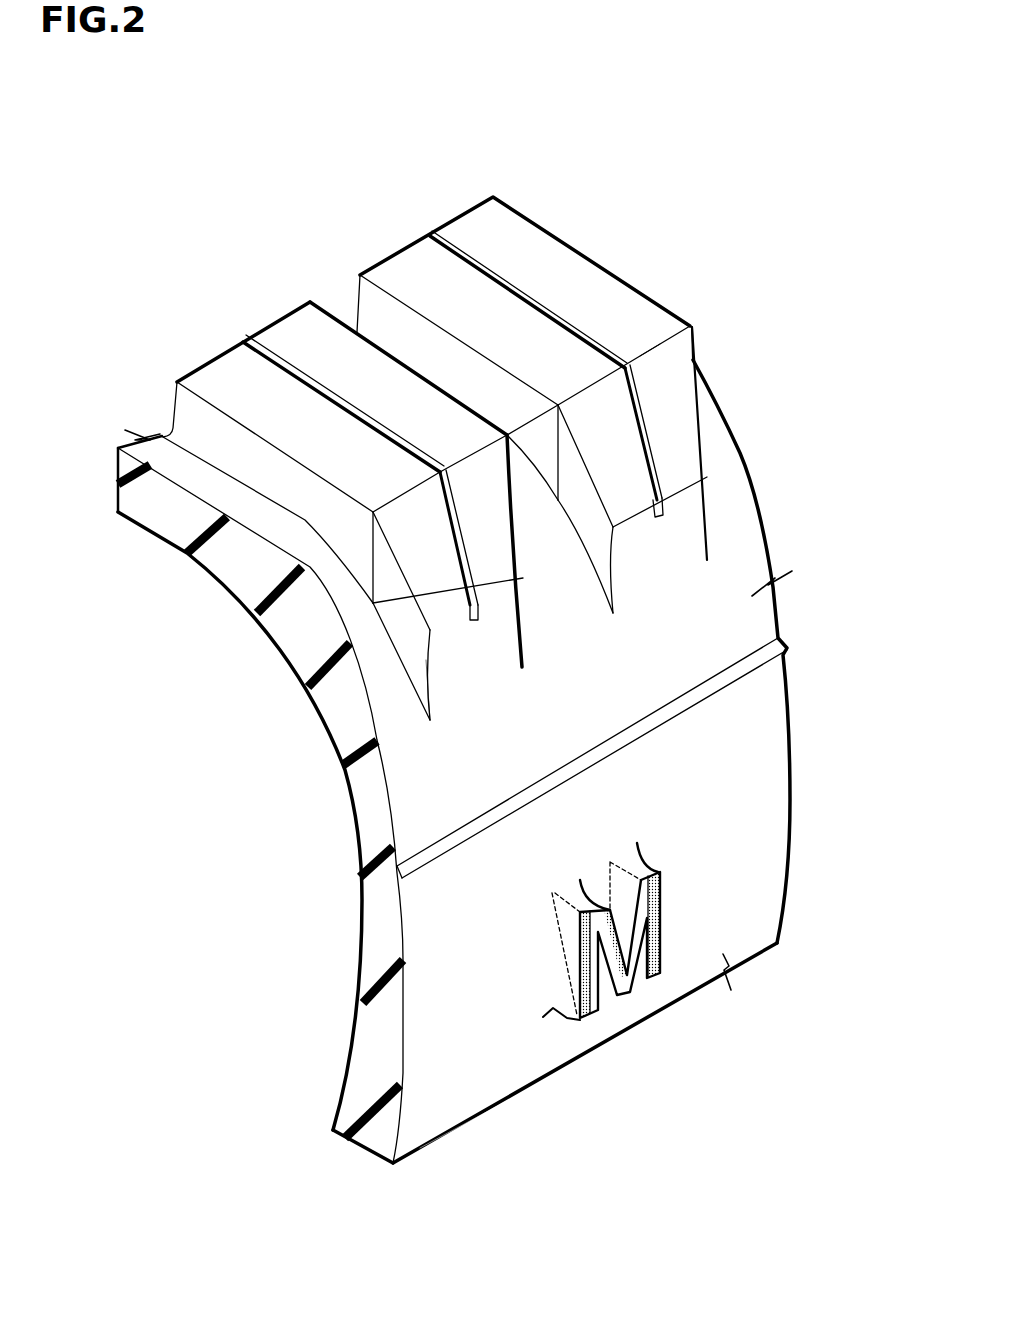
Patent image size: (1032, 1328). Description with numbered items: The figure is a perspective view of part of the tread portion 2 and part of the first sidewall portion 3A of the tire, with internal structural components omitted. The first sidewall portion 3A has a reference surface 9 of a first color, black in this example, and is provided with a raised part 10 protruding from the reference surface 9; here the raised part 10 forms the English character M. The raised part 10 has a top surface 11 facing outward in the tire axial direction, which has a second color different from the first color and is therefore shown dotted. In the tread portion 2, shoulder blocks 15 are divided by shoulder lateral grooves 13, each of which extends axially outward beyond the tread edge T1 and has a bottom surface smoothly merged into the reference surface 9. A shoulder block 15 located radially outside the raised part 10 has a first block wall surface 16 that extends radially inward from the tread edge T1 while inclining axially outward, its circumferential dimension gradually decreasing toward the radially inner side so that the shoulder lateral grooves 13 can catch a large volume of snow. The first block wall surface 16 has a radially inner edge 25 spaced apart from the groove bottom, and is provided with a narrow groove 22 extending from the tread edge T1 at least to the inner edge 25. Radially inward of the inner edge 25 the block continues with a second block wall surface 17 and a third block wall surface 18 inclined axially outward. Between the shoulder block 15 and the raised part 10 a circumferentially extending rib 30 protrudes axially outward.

The tread portion 2 is at (187, 283).
The first sidewall portion 3A is at (798, 775).
The reference surface 9 is at (480, 1048).
The raised part 10 is at (672, 916).
The top surface 11 is at (587, 993).
The shoulder lateral groove 13 is at (197, 447).
The shoulder block 15 is at (247, 390).
The first block wall surface 16 is at (420, 543).
The second block wall surface 17 is at (451, 630).
The third block wall surface 18 is at (481, 678).
The narrow groove 22 is at (298, 380).
The inner edge 25 is at (683, 485).
The rib 30 is at (753, 660).
The tread edge T1 is at (658, 343).